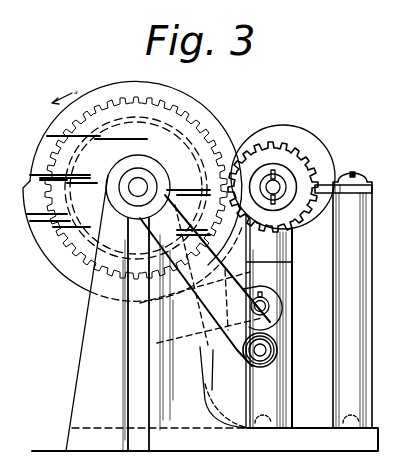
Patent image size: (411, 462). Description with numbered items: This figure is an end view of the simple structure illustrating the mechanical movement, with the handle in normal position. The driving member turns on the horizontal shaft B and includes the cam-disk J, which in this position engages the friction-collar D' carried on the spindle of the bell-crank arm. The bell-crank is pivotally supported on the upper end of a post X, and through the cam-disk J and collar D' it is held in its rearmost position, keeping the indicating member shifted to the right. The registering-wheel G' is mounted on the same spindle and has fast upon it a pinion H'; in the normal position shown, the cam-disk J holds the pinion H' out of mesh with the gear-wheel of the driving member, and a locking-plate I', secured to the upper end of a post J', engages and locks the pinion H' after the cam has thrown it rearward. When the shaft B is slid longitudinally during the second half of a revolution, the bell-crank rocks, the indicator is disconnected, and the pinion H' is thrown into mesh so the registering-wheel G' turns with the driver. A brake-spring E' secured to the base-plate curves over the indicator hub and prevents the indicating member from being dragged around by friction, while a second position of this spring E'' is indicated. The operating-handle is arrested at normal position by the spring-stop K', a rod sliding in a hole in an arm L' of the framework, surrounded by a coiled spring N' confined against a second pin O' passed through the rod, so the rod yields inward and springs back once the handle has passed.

The horizontal shaft B is at (142, 183).
The registering-wheel G' is at (283, 165).
The pinion H' is at (279, 174).
The friction-collar D' is at (307, 172).
The locking-plate I' is at (352, 173).
The post J' is at (365, 300).
The cam-disk J is at (200, 266).
The second pin O' is at (205, 280).
The brake-spring E' is at (201, 275).
The lever in second dotted position E'' is at (227, 393).
The arm of the framework L' is at (279, 297).
The coiled spring N' is at (285, 303).
The spring-stop K' is at (289, 314).
The post X is at (277, 368).